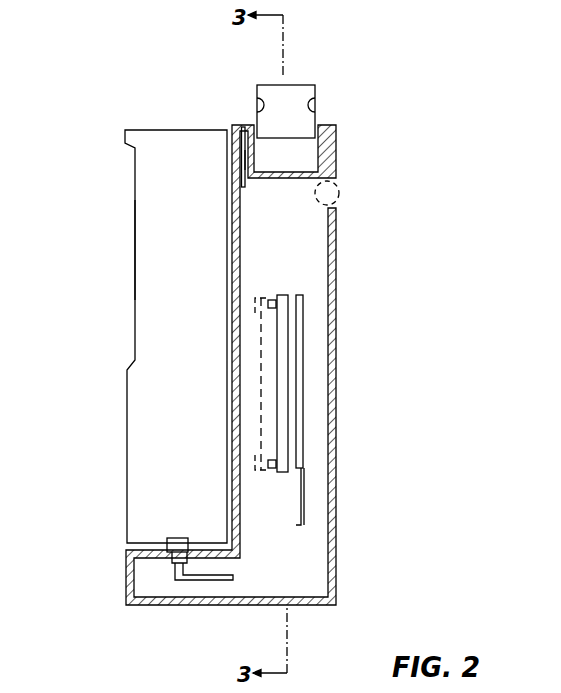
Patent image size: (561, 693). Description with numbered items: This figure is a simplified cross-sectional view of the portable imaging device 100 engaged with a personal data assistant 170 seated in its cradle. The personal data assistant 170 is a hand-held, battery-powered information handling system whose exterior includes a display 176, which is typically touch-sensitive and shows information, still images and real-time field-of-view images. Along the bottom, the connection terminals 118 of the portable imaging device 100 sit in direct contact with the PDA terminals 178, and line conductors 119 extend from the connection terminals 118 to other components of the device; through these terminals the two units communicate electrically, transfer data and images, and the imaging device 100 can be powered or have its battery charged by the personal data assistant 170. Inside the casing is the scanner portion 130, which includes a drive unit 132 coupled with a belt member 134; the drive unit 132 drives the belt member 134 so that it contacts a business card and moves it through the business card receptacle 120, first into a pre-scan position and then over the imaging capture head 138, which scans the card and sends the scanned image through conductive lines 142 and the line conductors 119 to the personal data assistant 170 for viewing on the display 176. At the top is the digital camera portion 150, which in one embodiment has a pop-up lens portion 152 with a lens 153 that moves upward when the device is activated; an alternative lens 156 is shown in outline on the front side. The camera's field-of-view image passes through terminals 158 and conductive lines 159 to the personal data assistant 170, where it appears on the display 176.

The portable imaging device 100 is at (309, 370).
The connection terminals 118 is at (170, 560).
The line conductors 119 is at (197, 581).
The business card receptacle 120 is at (283, 323).
The scanner portion 130 is at (367, 412).
The drive unit 132 is at (263, 296).
The belt member 134 is at (270, 470).
The imaging capture head 138 is at (303, 387).
The conductive lines 142 is at (303, 497).
The digital camera portion 150 is at (299, 146).
The pop-up lens portion 152 is at (331, 89).
The lens 153 is at (315, 105).
The lens 156 is at (322, 192).
The terminals 158 is at (238, 125).
The conductive lines 159 is at (243, 160).
The personal data assistant 170 is at (131, 293).
The display 176 is at (133, 222).
The PDA terminals 178 is at (175, 540).